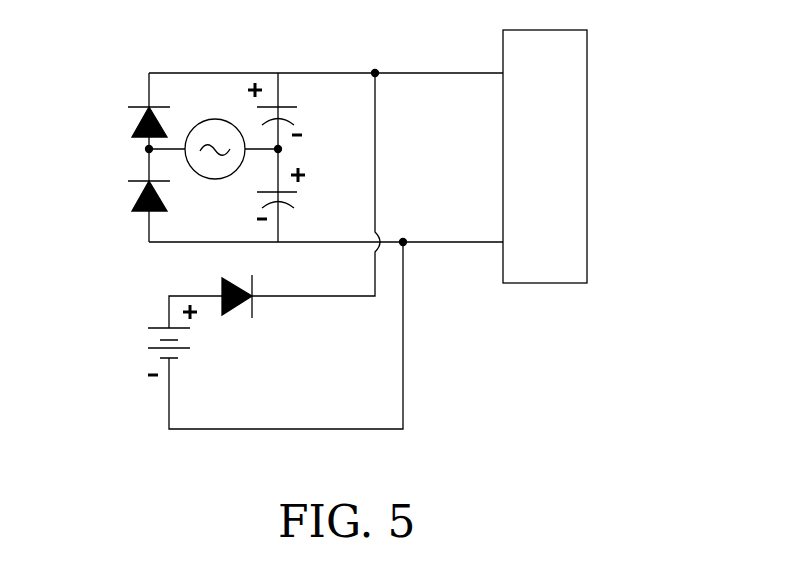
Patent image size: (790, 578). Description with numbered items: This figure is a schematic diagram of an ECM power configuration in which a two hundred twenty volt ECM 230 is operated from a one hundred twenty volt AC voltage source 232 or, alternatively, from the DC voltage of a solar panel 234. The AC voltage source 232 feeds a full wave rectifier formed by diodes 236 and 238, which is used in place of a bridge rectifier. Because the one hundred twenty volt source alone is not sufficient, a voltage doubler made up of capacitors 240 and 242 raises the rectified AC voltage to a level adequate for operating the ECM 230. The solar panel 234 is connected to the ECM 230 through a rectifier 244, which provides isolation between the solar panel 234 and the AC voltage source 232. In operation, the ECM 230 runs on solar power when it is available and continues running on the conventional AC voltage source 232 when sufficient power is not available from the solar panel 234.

The ECM 230 is at (587, 97).
The AC voltage source 232 is at (214, 119).
The solar panel 234 is at (160, 322).
The diode 236 is at (132, 127).
The diode 238 is at (132, 203).
The capacitor 240 is at (296, 122).
The capacitor 242 is at (296, 205).
The rectifier 244 is at (256, 305).